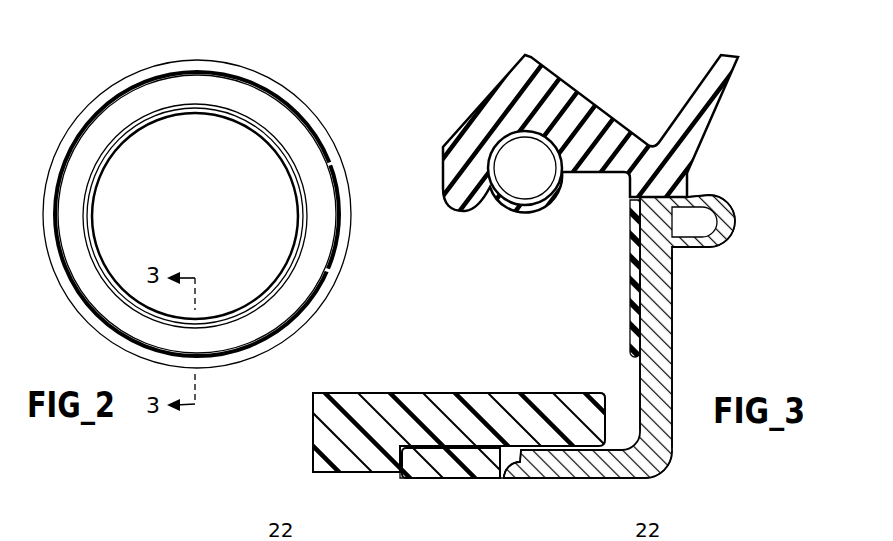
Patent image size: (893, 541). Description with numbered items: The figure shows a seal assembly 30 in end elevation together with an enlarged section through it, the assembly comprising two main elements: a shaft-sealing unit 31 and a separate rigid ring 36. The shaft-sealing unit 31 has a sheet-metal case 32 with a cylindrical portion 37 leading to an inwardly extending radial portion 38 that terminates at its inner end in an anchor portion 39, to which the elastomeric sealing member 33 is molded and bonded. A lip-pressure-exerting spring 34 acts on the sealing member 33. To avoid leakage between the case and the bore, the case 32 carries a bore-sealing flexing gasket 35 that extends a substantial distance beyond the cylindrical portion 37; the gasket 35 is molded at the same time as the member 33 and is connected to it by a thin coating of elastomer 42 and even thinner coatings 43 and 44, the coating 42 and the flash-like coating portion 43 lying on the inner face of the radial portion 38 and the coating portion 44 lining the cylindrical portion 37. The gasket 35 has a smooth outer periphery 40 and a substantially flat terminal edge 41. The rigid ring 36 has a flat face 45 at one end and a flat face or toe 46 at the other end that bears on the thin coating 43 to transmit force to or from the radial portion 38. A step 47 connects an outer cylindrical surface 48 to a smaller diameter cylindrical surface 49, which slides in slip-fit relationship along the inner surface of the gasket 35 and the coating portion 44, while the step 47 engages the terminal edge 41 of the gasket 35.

In FIG. 3, the seal assembly 30 is at (688, 485).
In FIG. 3, the shaft-sealing unit 31 is at (631, 336).
In FIG. 3, the metal case 32 is at (660, 298).
In FIG. 2, the elastomeric sealing member 33 is at (283, 272).
In FIG. 3, the elastomeric sealing member 33 is at (548, 78).
In FIG. 3, the lip-pressure-exerting spring 34 is at (539, 201).
In FIG. 2, the bore-sealing flexing gasket 35 is at (350, 218).
In FIG. 3, the bore-sealing flexing gasket 35 is at (450, 479).
In FIG. 2, the rigid ring 36 is at (317, 122).
In FIG. 3, the rigid ring 36 is at (383, 393).
In FIG. 3, the cylindrical portion 37 is at (560, 479).
In FIG. 3, the radial portion 38 is at (672, 383).
In FIG. 3, the anchor portion 39 is at (714, 238).
In FIG. 3, the outer periphery 40 is at (430, 480).
In FIG. 2, the terminal edge 41 is at (348, 198).
In FIG. 3, the terminal edge 41 is at (385, 473).
In FIG. 2, the thin coating of elastomer 42 is at (322, 185).
In FIG. 3, the thin coating of elastomer 42 is at (630, 345).
In FIG. 2, the thinner coating portion 43 is at (340, 235).
In FIG. 3, the thinner coating portion 43 is at (668, 443).
In FIG. 3, the coating portion 44 is at (603, 479).
In FIG. 3, the flat face 45 is at (313, 430).
In FIG. 3, the toe 46 is at (607, 405).
In FIG. 3, the step 47 is at (404, 478).
In FIG. 3, the outer cylindrical surface 48 is at (343, 473).
In FIG. 3, the smaller diameter cylindrical surface 49 is at (502, 479).